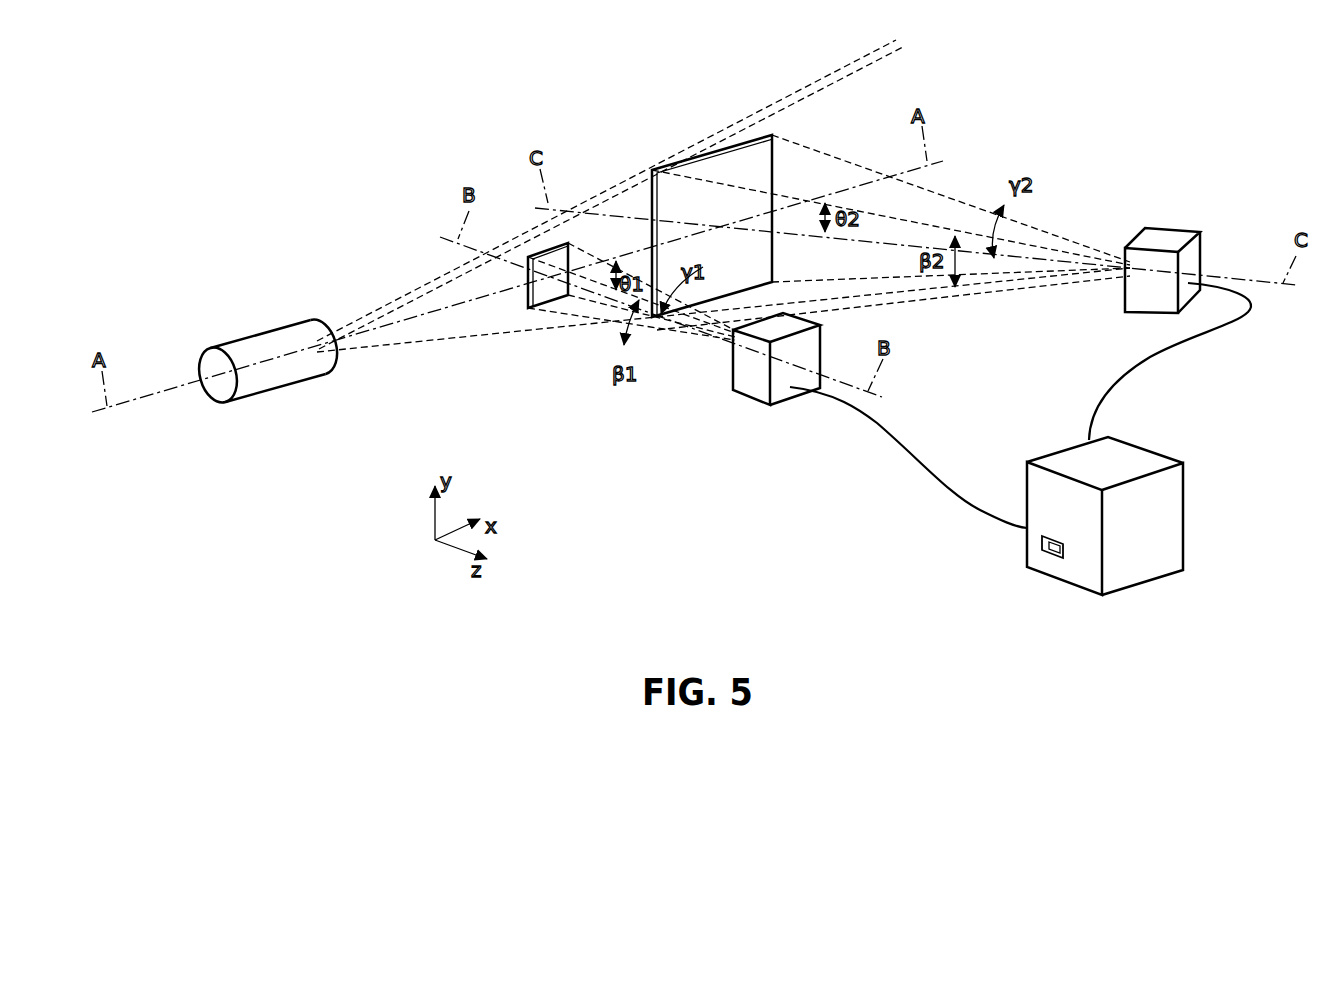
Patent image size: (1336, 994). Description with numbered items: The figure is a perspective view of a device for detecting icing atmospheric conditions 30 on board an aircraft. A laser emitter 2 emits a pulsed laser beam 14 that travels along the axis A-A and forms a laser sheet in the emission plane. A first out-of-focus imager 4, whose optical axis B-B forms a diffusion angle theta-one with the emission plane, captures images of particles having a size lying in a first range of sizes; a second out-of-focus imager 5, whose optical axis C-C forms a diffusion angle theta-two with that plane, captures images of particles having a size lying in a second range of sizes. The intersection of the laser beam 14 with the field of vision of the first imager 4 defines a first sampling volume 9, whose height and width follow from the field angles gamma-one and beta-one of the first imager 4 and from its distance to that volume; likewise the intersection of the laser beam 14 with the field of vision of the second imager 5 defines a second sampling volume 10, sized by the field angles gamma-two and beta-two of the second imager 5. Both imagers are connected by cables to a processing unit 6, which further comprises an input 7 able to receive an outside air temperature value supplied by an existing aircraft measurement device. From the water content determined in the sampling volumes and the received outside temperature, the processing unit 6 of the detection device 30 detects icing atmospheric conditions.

The laser emitter 2 is at (250, 383).
The first out-of-focus imager 4 is at (753, 388).
The second out-of-focus imager 5 is at (1165, 238).
The processing unit 6 is at (1135, 457).
The input 7 is at (1048, 557).
The first sampling volume 9 is at (546, 243).
The second sampling volume 10 is at (701, 150).
The pulsed laser beam 14 is at (431, 294).
The device for detecting icing atmospheric conditions 30 is at (677, 520).